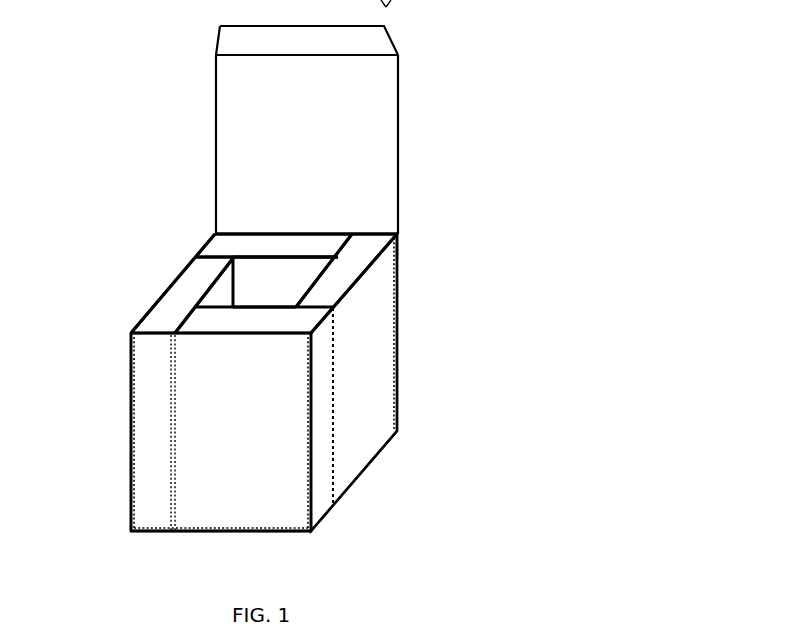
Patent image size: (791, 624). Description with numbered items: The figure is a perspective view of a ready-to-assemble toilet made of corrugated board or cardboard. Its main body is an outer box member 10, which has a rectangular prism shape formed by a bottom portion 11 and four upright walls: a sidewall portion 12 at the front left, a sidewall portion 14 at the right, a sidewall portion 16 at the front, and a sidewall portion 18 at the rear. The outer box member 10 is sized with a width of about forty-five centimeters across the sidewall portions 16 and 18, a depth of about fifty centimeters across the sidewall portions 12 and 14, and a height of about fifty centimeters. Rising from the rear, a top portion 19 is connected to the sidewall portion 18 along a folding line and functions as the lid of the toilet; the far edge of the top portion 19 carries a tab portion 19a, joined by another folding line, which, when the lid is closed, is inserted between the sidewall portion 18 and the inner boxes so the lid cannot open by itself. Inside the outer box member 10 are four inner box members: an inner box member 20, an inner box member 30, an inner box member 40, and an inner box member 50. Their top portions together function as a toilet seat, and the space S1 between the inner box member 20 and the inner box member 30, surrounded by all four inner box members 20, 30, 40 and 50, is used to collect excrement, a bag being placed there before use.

The outer box member 10 is at (130, 370).
The bottom portion 11 is at (250, 539).
The sidewall portion 12 is at (129, 320).
The sidewall portion 14 is at (375, 365).
The sidewall portion 16 is at (223, 427).
The sidewall portion 18 is at (410, 244).
The top portion 19 is at (273, 125).
The tab portion 19a is at (237, 44).
The inner box member 20 is at (162, 307).
The inner box member 30 is at (352, 262).
The inner box member 40 is at (216, 320).
The inner box member 50 is at (252, 245).
The space S1 is at (277, 294).